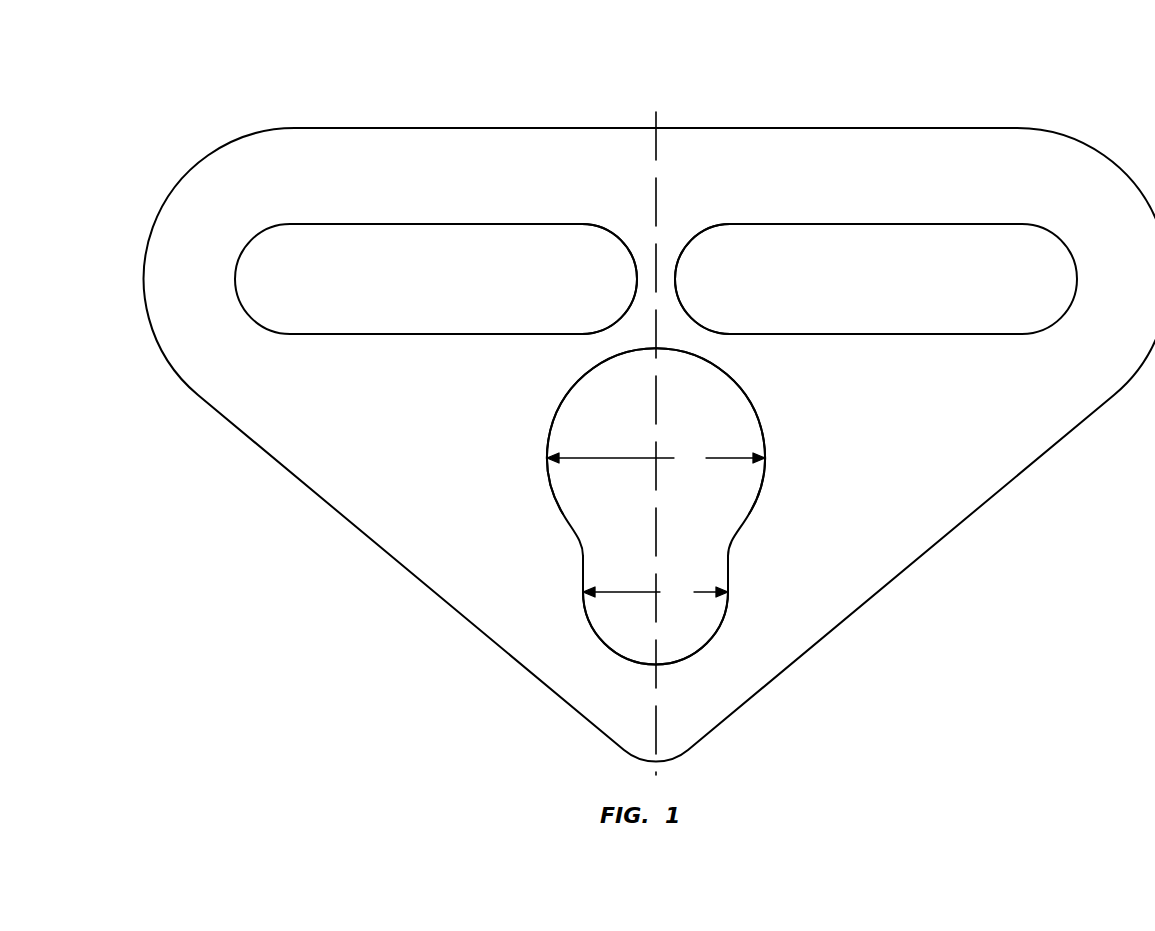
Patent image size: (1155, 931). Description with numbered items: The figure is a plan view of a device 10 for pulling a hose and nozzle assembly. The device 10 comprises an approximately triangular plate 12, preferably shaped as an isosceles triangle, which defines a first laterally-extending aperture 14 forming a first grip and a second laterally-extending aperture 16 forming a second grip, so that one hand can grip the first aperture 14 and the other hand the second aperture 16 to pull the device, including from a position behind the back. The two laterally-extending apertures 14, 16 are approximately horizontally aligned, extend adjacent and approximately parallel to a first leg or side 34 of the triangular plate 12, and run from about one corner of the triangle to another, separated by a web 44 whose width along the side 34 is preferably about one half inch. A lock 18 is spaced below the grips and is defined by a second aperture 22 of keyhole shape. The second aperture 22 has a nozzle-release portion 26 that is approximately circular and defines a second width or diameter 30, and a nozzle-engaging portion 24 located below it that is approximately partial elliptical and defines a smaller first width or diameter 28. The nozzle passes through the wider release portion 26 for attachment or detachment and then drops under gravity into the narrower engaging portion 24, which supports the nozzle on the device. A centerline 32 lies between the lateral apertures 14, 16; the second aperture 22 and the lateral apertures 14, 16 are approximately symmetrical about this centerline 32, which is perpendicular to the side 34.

The device for pulling a hose and nozzle assembly 10 is at (800, 95).
The plate 12 is at (965, 128).
The first laterally-extending aperture 14 is at (420, 333).
The second laterally-extending aperture 16 is at (888, 333).
The lock 18 is at (762, 489).
The second aperture 22 is at (690, 524).
The nozzle-engaging portion 24 is at (590, 628).
The nozzle-release portion 26 is at (551, 479).
The first width or diameter 28 is at (655, 592).
The second width or diameter 30 is at (656, 458).
The centerline 32 is at (658, 192).
The first leg or side 34 is at (571, 128).
The web 44 is at (646, 271).